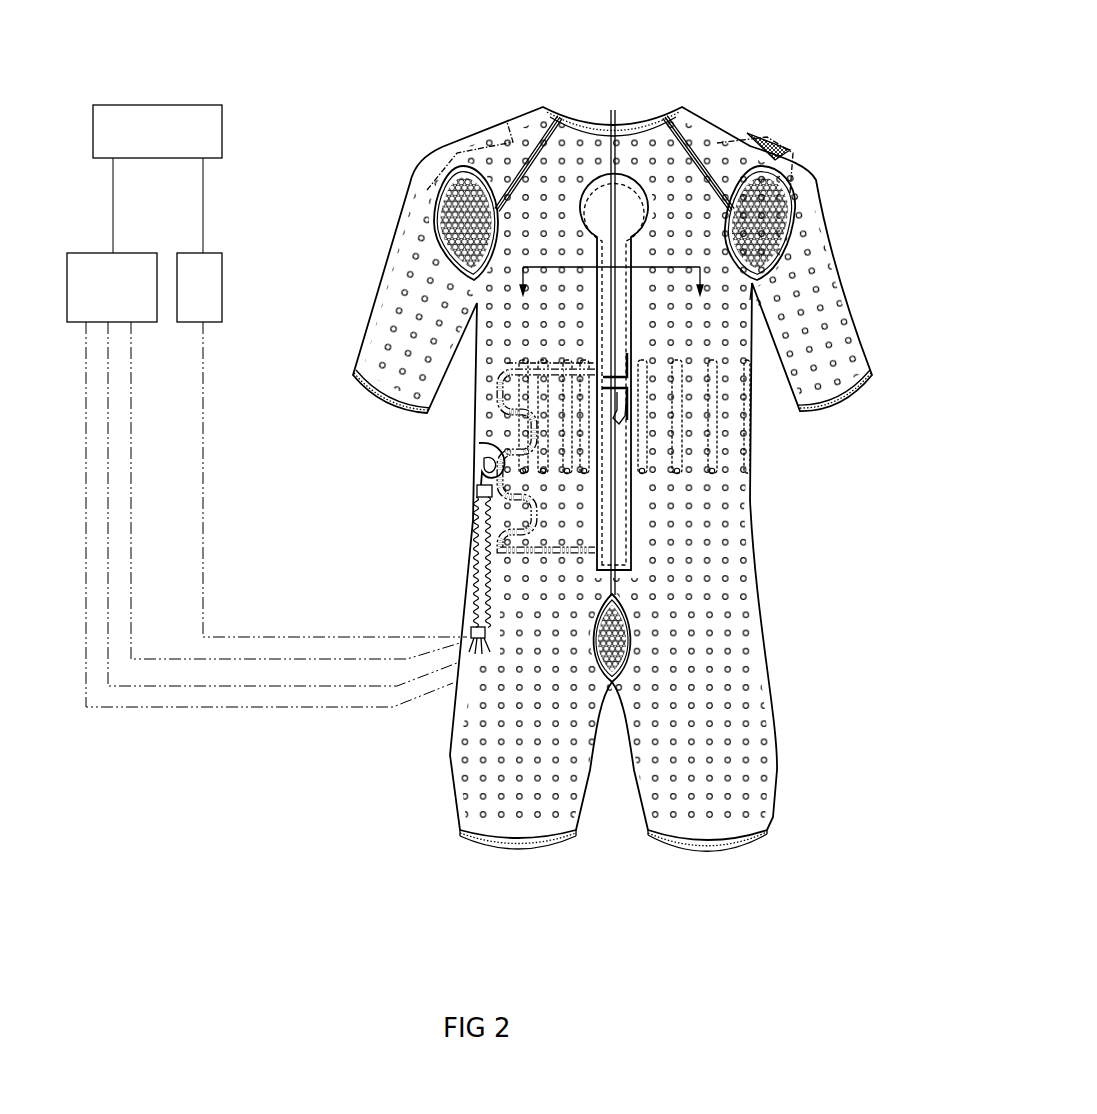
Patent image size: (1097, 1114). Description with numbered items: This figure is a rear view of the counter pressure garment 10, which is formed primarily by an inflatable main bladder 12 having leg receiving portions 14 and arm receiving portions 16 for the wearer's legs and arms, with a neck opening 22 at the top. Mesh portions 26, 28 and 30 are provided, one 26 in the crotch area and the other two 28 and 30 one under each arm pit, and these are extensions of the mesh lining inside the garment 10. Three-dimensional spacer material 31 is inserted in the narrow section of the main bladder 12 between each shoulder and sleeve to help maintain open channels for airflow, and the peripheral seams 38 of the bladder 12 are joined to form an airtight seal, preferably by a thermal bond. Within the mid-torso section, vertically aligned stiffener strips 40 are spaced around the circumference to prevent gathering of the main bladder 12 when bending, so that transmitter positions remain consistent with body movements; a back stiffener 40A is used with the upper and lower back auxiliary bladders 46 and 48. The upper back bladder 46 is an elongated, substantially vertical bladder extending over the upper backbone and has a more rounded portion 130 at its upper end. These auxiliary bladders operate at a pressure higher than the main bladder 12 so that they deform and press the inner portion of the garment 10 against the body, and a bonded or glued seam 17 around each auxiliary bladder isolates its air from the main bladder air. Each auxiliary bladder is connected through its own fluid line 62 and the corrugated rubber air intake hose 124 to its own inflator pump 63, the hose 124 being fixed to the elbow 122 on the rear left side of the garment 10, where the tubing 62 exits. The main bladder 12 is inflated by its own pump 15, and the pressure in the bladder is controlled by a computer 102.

The garment 10 is at (693, 90).
The main bladder 12 is at (552, 195).
The leg receiving portions 14 is at (740, 790).
The pump 15 is at (322, 445).
The arm receiving portions 16 is at (400, 230).
The seam 17 is at (640, 180).
The neck opening 22 is at (606, 105).
The mesh portion 26 is at (617, 647).
The mesh portion 28 is at (773, 222).
The mesh portion 30 is at (472, 207).
The three-dimensional spacer material 31 is at (455, 153).
The peripheral seams 38 is at (610, 153).
The stiffener strips 40 is at (717, 360).
The back stiffener 40A is at (633, 300).
The upper back auxiliary bladder 46 is at (625, 358).
The lower back auxiliary bladder 48 is at (627, 393).
The fluid line 62 is at (475, 520).
The inflator pump 63 is at (263, 480).
The computer 102 is at (165, 103).
The elbow 122 is at (477, 477).
The air intake hose 124 is at (472, 540).
The rounded portion 130 is at (632, 220).